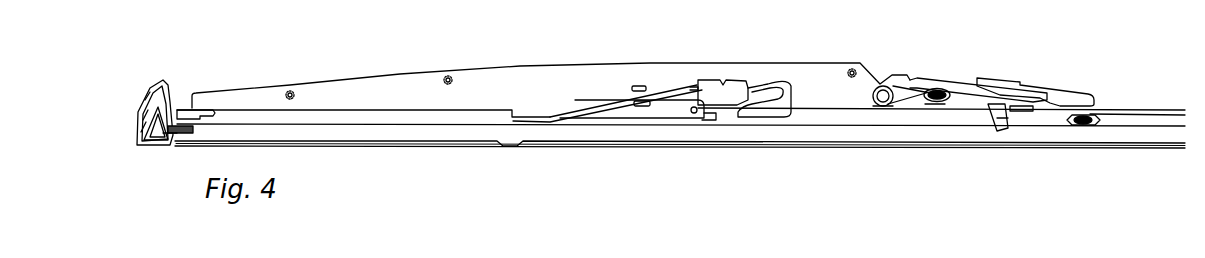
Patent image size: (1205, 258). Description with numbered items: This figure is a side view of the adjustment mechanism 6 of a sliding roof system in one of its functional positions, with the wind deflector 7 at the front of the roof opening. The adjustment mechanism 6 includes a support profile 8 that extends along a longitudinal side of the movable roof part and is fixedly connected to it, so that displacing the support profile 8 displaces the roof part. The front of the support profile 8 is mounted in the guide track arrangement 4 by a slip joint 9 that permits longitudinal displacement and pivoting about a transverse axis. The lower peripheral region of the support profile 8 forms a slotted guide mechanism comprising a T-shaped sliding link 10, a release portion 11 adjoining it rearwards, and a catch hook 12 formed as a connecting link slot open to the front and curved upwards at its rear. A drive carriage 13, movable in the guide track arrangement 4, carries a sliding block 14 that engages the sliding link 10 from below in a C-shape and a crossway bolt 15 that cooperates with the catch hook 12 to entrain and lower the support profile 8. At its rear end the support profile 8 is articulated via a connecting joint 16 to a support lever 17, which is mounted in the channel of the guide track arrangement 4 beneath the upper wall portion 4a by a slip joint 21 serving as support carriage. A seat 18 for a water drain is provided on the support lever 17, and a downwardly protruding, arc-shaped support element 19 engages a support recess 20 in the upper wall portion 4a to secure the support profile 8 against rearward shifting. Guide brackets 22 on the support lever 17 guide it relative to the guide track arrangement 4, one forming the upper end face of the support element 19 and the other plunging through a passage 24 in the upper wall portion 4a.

The guide track arrangement 4 is at (816, 136).
The upper wall portion 4a is at (1132, 110).
The adjustment mechanism 6 is at (514, 57).
The wind deflector 7 is at (167, 95).
The support profile 8 is at (550, 75).
The slip joint 9 is at (203, 137).
The sliding link 10 is at (593, 102).
The release portion 11 is at (720, 82).
The catch hook 12 is at (772, 90).
The drive carriage 13 is at (660, 113).
The sliding block 14 is at (662, 96).
The crossway bolt 15 is at (700, 113).
The connecting joint 16 is at (885, 110).
The support lever 17 is at (910, 80).
The seat 18 is at (1023, 85).
The support element 19 is at (1001, 128).
The support recess 20 is at (983, 113).
The slip joint 21 is at (1090, 127).
The guide brackets 22 is at (940, 93).
The passage 24 is at (933, 107).